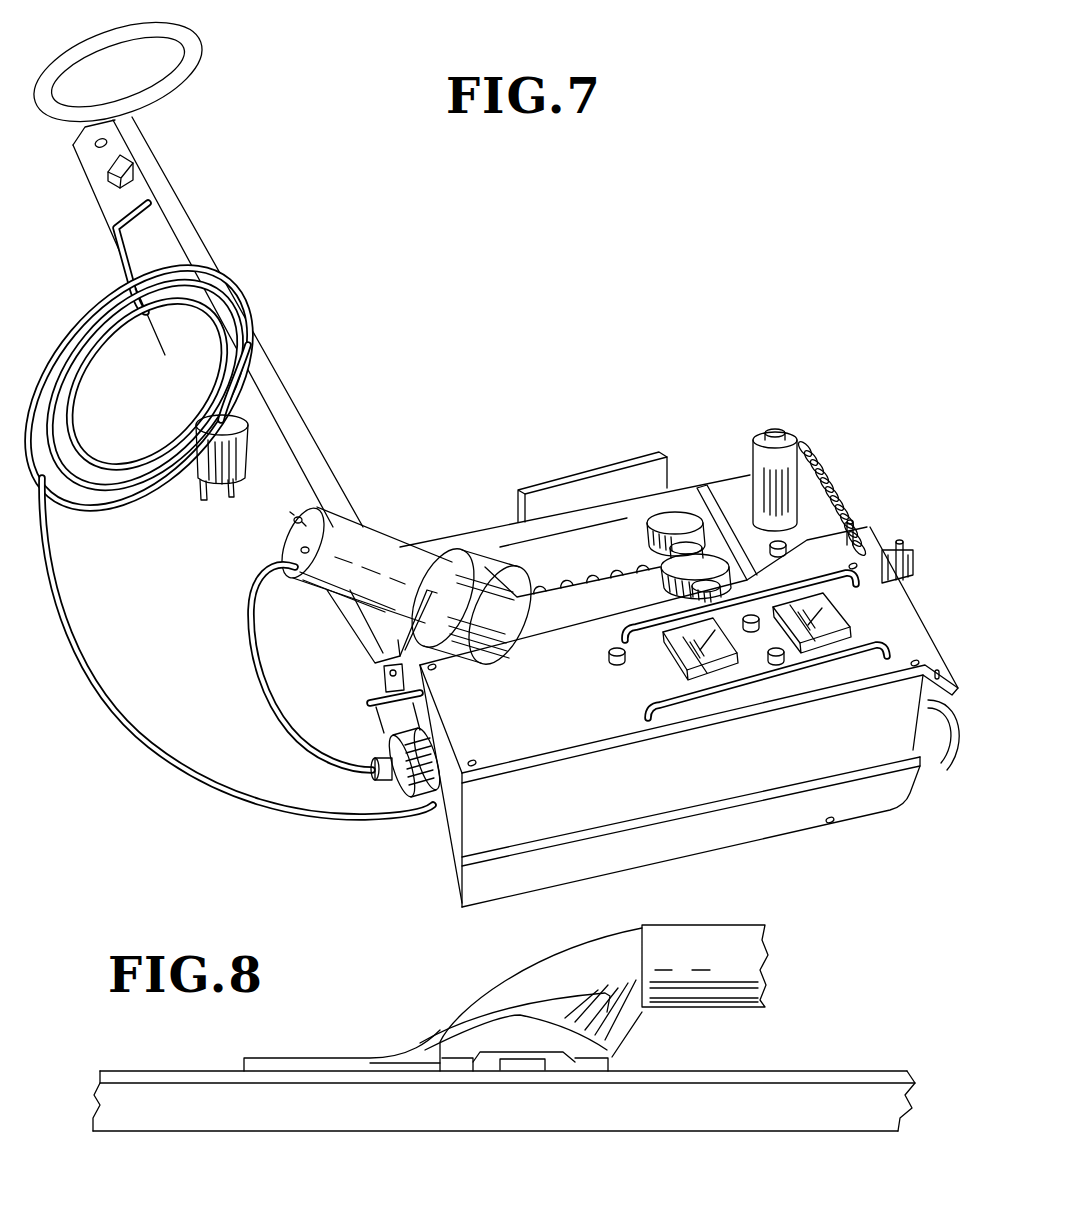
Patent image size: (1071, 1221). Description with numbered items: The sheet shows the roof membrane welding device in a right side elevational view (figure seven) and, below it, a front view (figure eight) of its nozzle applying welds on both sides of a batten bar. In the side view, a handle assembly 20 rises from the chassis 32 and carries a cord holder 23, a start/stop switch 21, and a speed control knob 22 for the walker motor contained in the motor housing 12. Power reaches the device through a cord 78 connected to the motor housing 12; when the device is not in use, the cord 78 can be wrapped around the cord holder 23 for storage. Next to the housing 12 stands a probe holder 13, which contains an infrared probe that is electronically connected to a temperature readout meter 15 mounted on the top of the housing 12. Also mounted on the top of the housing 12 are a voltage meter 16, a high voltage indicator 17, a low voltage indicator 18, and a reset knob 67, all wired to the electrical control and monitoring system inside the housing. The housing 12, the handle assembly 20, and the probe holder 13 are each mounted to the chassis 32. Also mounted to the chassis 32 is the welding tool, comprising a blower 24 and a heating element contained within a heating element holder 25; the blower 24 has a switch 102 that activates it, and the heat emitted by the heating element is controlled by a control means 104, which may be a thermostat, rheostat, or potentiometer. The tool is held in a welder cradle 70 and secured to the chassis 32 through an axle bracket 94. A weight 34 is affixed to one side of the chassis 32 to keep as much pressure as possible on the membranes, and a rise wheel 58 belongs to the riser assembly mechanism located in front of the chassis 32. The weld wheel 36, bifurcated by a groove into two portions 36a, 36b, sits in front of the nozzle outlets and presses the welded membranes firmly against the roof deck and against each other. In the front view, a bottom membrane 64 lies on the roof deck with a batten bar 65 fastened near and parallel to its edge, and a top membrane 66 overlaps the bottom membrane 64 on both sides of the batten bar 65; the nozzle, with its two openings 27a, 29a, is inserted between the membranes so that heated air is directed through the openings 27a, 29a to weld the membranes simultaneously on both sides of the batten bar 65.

In FIG. 7, the motor housing 12 is at (485, 822).
In FIG. 7, the probe holder 13 is at (795, 470).
In FIG. 7, the temperature readout meter 15 is at (835, 622).
In FIG. 7, the voltage meter 16 is at (725, 690).
In FIG. 7, the high voltage indicator 17 is at (776, 662).
In FIG. 7, the low voltage indicator 18 is at (751, 630).
In FIG. 7, the handle assembly 20 is at (170, 178).
In FIG. 7, the start/stop switch 21 is at (113, 172).
In FIG. 7, the speed control knob 22 is at (110, 133).
In FIG. 7, the cord holder 23 is at (112, 244).
In FIG. 7, the blower 24 is at (355, 548).
In FIG. 8, the heating element holder 25 is at (765, 940).
In FIG. 8, the opening 27a is at (605, 1062).
In FIG. 8, the opening 29a is at (447, 1060).
In FIG. 7, the chassis 32 is at (527, 878).
In FIG. 7, the weight 34 is at (610, 470).
In FIG. 7, the weld wheel 36 is at (642, 498).
In FIG. 7, the weld wheel portion 36a is at (678, 522).
In FIG. 7, the weld wheel portion 36b is at (635, 575).
In FIG. 7, the rise wheel 58 is at (940, 708).
In FIG. 8, the bottom membrane 64 is at (846, 1071).
In FIG. 8, the batten bar 65 is at (525, 1062).
In FIG. 8, the top membrane 66 is at (370, 1012).
In FIG. 7, the reset knob 67 is at (618, 665).
In FIG. 7, the welder cradle 70 is at (375, 632).
In FIG. 7, the cord 78 is at (145, 508).
In FIG. 7, the axle bracket 94 is at (385, 685).
In FIG. 7, the switch 102 is at (290, 518).
In FIG. 7, the control means 104 is at (292, 554).